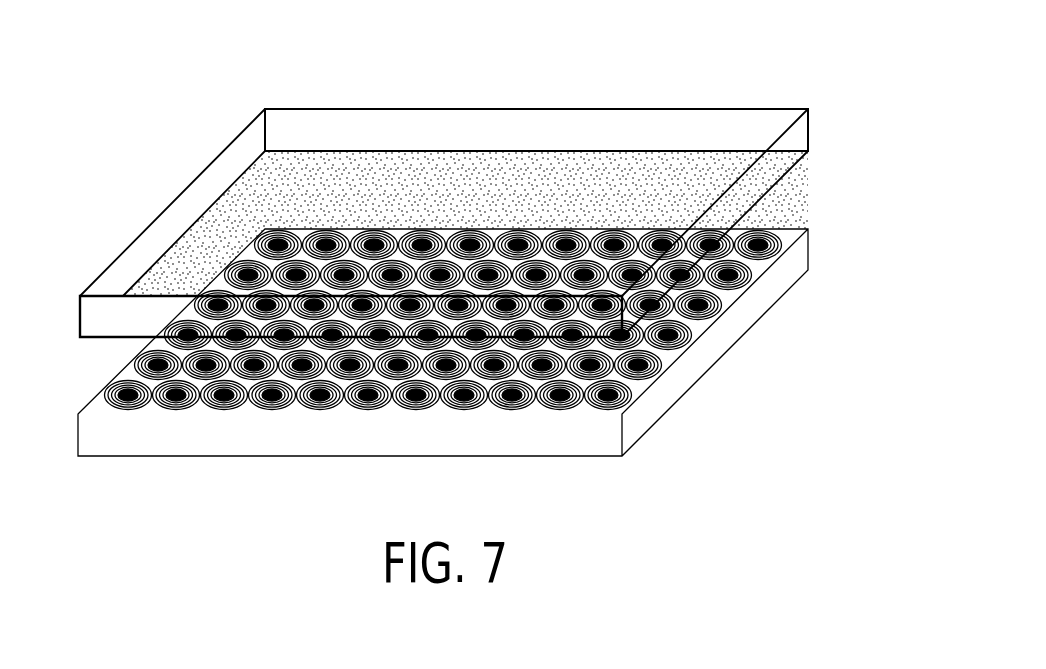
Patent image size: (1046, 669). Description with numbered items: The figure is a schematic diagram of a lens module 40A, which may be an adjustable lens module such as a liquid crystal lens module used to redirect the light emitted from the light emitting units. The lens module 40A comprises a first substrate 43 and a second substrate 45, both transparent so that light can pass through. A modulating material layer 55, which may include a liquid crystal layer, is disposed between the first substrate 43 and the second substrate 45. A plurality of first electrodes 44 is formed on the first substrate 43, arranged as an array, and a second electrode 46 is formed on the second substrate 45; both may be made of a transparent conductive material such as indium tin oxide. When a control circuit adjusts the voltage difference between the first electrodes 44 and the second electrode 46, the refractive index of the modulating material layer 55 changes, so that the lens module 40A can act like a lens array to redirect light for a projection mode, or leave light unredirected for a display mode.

The lens module 40A is at (500, 183).
The first substrate 43 is at (672, 392).
The first electrodes 44 is at (121, 406).
The second substrate 45 is at (700, 108).
The second electrode 46 is at (192, 226).
The modulating material layer 55 is at (394, 378).